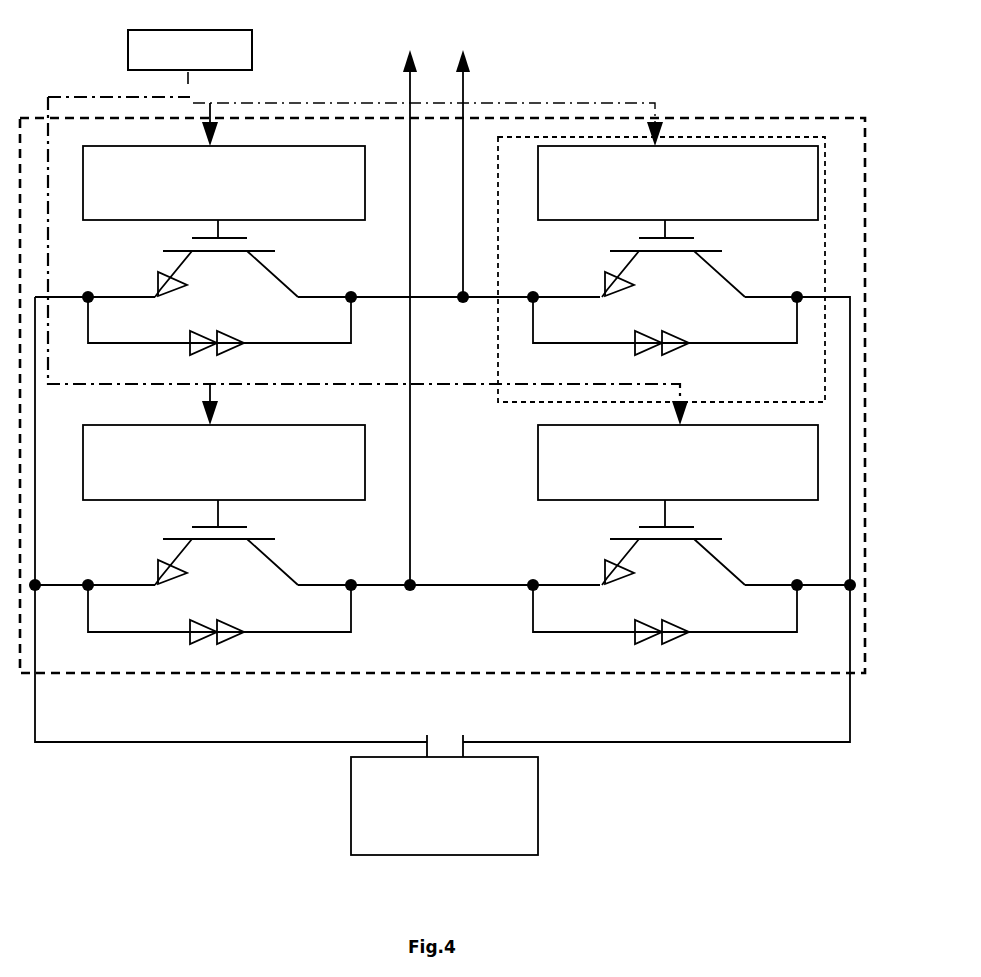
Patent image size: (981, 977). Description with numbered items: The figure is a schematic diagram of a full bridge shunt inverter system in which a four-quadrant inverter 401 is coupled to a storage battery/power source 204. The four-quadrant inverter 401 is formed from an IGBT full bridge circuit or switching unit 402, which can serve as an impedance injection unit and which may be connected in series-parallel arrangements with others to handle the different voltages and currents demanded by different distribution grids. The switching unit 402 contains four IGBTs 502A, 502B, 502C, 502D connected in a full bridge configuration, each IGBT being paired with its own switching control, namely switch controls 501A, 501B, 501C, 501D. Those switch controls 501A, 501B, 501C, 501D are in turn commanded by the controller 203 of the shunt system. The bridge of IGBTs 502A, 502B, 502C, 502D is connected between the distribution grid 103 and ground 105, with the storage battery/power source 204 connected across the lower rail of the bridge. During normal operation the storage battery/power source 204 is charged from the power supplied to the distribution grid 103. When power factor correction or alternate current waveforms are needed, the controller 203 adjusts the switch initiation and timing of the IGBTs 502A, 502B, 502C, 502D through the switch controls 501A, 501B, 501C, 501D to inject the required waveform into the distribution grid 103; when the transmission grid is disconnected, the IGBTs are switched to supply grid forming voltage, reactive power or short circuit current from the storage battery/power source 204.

The controller 203 is at (190, 50).
The distribution grid 103 is at (408, 58).
The ground 105 is at (463, 60).
The four-quadrant inverter 401 is at (865, 118).
The IGBT full bridge circuit 402 is at (720, 137).
The switch control A 501A is at (224, 183).
The switch control B 501B is at (678, 462).
The switch control C 501C is at (224, 462).
The switch control D 501D is at (678, 183).
The IGBT 502A is at (180, 238).
The IGBT 502B is at (615, 527).
The IGBT 502C is at (180, 527).
The IGBT 502D is at (710, 238).
The storage battery/power source 204 is at (538, 825).